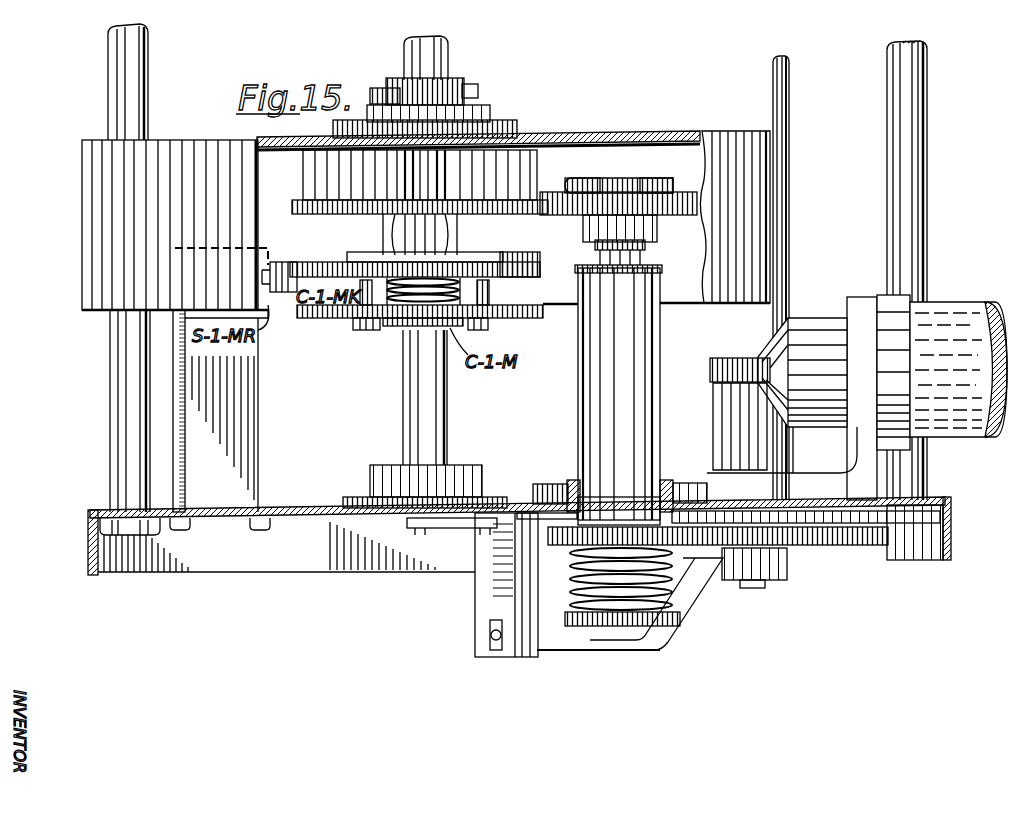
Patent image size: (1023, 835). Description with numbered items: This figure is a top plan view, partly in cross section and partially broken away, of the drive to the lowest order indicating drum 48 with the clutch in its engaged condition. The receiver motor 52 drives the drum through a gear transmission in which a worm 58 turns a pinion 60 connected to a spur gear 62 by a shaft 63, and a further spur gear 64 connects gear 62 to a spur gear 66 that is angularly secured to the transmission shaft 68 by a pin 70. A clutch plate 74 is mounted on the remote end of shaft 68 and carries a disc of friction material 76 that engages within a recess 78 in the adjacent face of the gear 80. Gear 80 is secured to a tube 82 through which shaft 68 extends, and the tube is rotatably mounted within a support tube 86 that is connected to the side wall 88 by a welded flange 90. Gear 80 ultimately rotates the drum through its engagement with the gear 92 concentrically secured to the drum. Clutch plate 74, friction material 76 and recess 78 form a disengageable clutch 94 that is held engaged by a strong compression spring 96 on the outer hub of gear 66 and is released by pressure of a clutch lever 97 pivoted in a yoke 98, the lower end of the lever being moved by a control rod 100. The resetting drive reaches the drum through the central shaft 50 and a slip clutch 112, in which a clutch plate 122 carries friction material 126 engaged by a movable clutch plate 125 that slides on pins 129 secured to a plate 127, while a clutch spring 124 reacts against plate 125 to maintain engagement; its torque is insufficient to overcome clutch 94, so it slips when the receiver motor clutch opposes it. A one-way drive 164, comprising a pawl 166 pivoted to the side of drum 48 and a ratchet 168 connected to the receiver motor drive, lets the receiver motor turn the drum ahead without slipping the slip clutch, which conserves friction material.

The lowest order indicating drum 48 is at (112, 222).
The shaft 50 is at (430, 50).
The receiver motor 52 is at (945, 312).
The worm 58 is at (752, 357).
The pinion 60 is at (712, 373).
The spur gear 62 is at (798, 550).
The shaft 63 is at (705, 485).
The spur gear 64 is at (850, 550).
The spur gear 66 is at (580, 560).
The transmission shaft 68 is at (578, 614).
The pin 70 is at (626, 540).
The clutch plate 74 is at (606, 190).
The disc of friction material 76 is at (576, 184).
The recess 78 is at (660, 174).
The gear 80 is at (586, 222).
The tube 82 is at (630, 258).
The support tube 86 is at (617, 334).
The side wall 88 is at (283, 512).
The welded flange 90 is at (580, 484).
The gear 92 is at (312, 218).
The disengageable clutch 94 is at (683, 178).
The compression spring 96 is at (684, 598).
The clutch lever 97 is at (628, 646).
The yoke 98 is at (497, 598).
The control rod 100 is at (783, 222).
The slip clutch 112 is at (464, 331).
The clutch plate 122 is at (405, 328).
The clutch spring 124 is at (462, 290).
The movable clutch plate 125 is at (518, 312).
The friction material 126 is at (380, 327).
The plate 127 is at (506, 266).
The pins 129 is at (415, 263).
The one-way drive 164 is at (478, 92).
The pawl 166 is at (388, 90).
The ratchet 168 is at (462, 85).